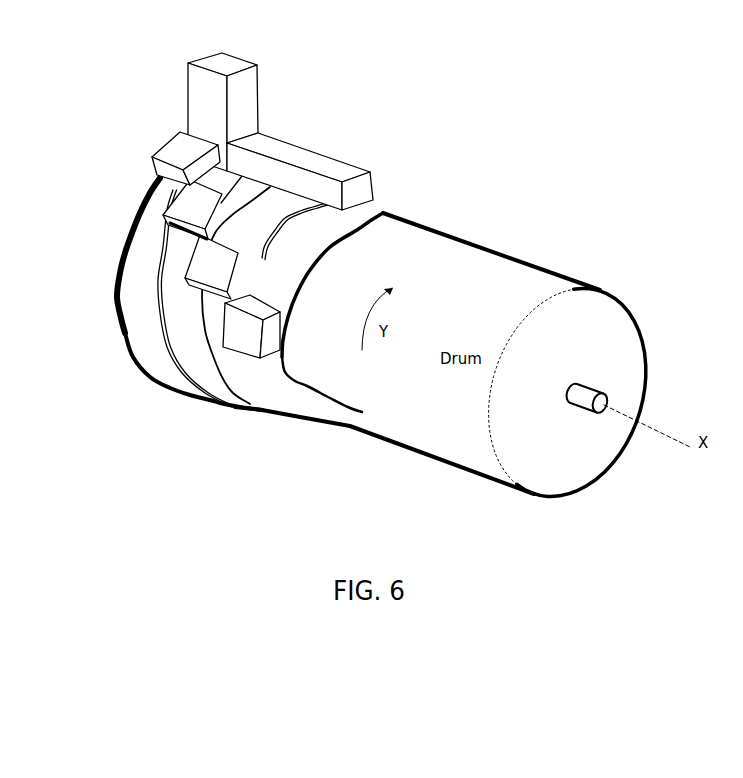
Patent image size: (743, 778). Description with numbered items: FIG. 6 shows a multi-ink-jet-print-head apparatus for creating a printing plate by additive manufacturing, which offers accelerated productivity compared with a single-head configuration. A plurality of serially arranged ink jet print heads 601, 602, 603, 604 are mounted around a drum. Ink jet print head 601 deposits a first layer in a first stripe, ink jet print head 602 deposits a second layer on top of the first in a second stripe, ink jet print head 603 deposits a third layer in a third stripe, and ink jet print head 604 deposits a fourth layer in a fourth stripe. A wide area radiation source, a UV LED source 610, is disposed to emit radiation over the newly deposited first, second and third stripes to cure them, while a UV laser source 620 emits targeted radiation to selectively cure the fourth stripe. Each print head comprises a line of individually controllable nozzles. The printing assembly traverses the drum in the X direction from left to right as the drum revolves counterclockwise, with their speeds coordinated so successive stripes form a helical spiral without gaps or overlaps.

The ink jet print head 601 is at (242, 333).
The ink jet print head 602 is at (217, 267).
The ink jet print head 603 is at (187, 208).
The ink jet print head 604 is at (185, 148).
The UV LED source 610 is at (308, 158).
The UV laser source 620 is at (252, 90).